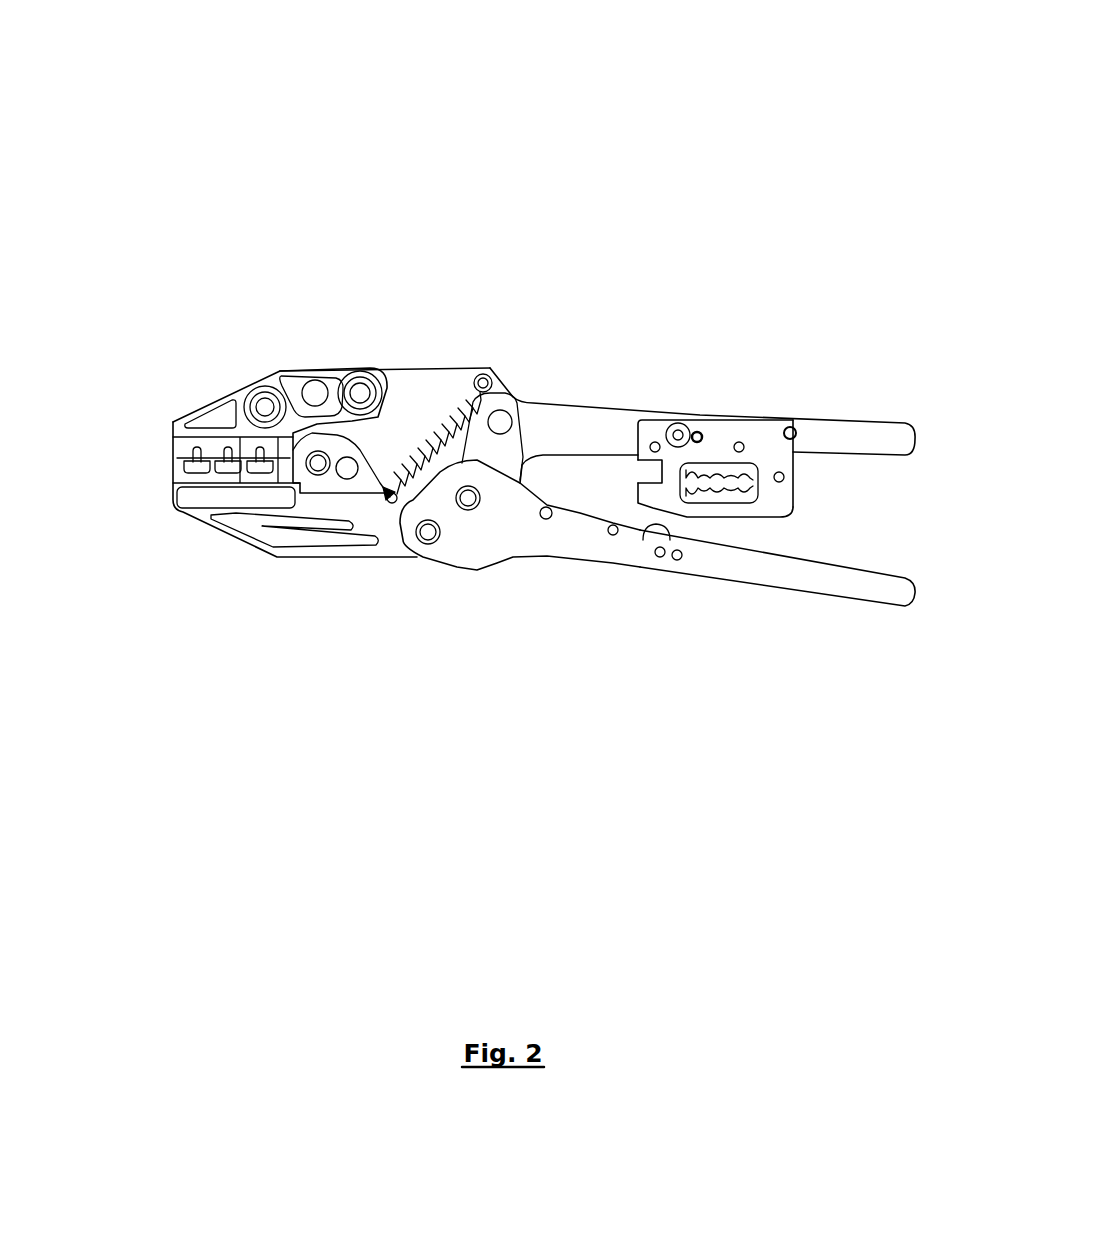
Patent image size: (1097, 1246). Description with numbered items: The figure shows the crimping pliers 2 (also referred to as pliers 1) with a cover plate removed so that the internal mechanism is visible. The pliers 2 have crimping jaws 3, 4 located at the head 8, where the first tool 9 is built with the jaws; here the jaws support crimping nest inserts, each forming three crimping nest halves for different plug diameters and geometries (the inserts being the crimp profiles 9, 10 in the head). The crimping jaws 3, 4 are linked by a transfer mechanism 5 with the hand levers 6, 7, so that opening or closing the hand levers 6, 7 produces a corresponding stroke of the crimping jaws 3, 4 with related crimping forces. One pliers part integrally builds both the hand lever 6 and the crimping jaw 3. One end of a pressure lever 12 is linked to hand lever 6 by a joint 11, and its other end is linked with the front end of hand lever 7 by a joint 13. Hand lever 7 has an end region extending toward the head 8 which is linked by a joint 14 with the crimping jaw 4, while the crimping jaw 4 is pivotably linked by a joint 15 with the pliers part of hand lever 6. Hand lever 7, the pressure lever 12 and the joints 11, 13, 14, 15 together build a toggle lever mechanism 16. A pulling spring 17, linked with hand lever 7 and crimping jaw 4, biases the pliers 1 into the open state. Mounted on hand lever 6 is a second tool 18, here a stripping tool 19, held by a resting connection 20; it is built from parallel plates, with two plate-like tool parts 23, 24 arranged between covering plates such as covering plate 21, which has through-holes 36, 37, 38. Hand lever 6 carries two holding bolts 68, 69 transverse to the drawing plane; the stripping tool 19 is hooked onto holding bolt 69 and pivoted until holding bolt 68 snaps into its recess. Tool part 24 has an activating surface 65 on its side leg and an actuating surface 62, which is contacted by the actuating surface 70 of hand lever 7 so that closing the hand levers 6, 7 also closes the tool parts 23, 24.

The pliers 1 is at (496, 394).
The crimping pliers 2 is at (496, 394).
The crimping jaw 3 is at (196, 412).
The crimping jaw 4 is at (213, 530).
The transfer mechanism 5 is at (458, 592).
The hand lever 6 is at (838, 442).
The hand lever 7 is at (830, 583).
The head 8 is at (308, 322).
The first tool 9 is at (183, 442).
The crimp profile 10 is at (157, 451).
The joint 11 is at (503, 422).
The pressure lever 12 is at (519, 331).
The joint 13 is at (470, 505).
The joint 14 is at (428, 545).
The joint 15 is at (318, 466).
The toggle lever mechanism 16 is at (504, 615).
The pulling spring 17 is at (441, 395).
The second tool 18 is at (735, 476).
The stripping tool 19 is at (735, 476).
The resting connection 20 is at (677, 397).
The covering plate 21 is at (777, 460).
The tool part 23 is at (747, 464).
The tool part 24 is at (743, 493).
The through-hole 36 is at (655, 441).
The through-hole 37 is at (738, 441).
The through-hole 38 is at (785, 477).
The actuating surface 62 is at (643, 540).
The activating surface 65 is at (643, 513).
The holding bolt 68 is at (697, 428).
The holding bolt 69 is at (790, 425).
The actuating surface 70 is at (670, 540).